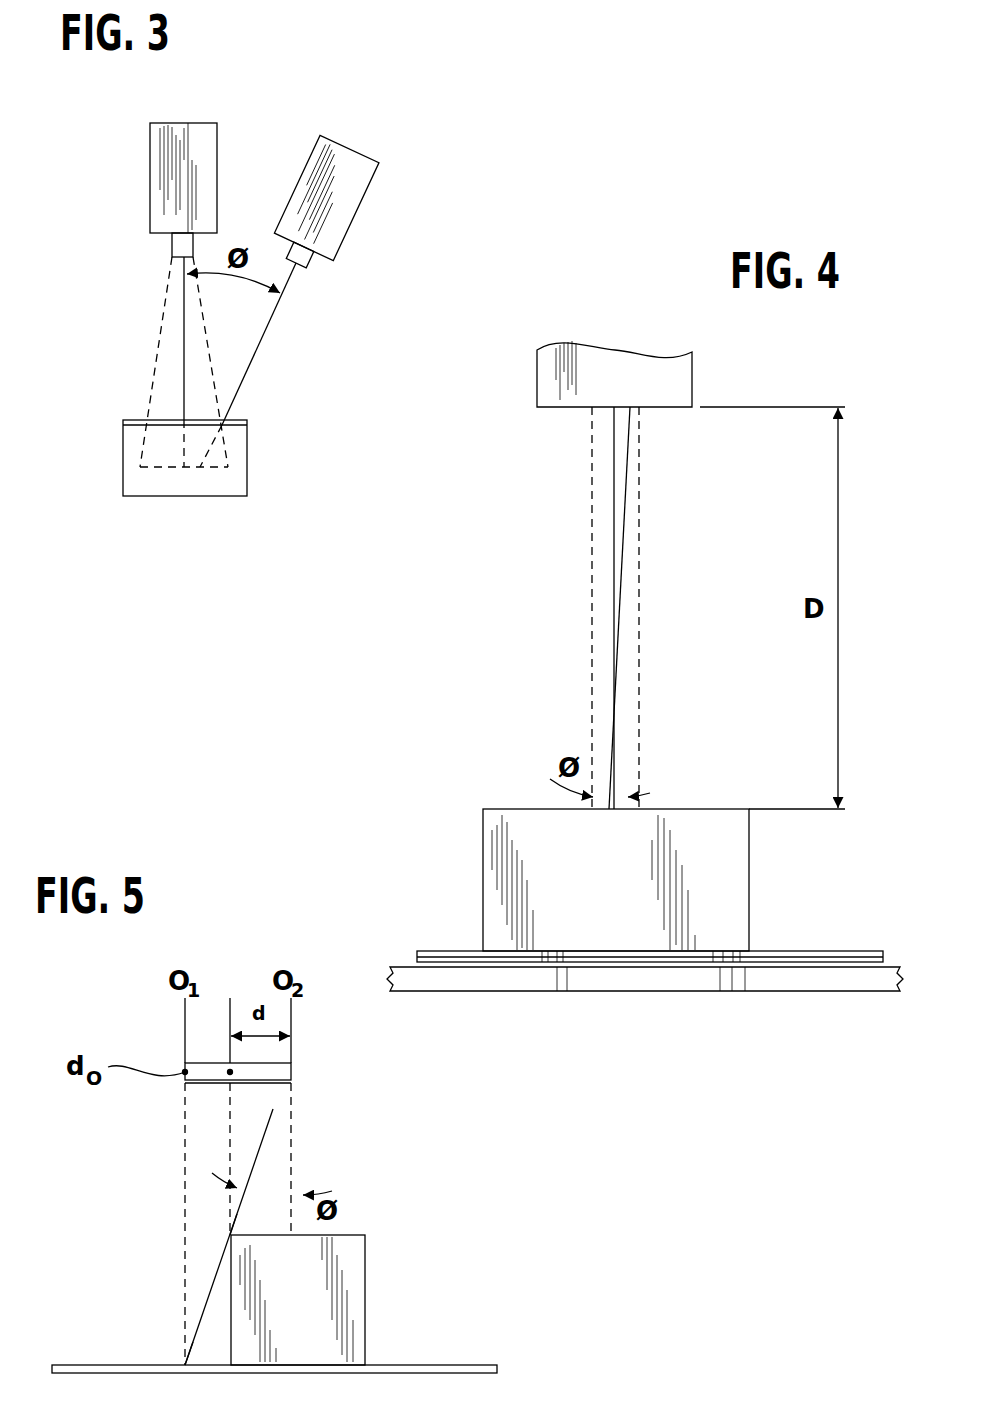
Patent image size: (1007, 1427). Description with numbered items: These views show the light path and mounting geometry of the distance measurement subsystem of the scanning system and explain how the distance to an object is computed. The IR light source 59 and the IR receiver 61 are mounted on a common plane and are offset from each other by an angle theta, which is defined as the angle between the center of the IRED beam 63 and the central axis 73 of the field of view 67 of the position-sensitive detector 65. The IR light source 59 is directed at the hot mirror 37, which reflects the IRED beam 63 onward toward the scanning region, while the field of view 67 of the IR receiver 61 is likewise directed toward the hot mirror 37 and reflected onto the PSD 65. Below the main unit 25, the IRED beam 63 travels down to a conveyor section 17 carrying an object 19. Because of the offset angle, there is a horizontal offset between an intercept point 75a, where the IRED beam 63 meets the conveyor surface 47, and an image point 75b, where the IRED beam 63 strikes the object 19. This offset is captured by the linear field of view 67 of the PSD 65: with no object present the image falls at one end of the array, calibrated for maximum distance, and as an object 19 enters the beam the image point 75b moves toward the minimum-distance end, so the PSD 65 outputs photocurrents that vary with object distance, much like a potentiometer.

In FIG. 4, the conveyor section 17 is at (840, 987).
In FIG. 4, the object 19 is at (716, 837).
In FIG. 5, the object 19 is at (348, 1267).
In FIG. 4, the main unit 25 is at (675, 378).
In FIG. 3, the hot mirror 37 is at (130, 482).
In FIG. 4, the conveyor surface 47 is at (820, 951).
In FIG. 5, the conveyor surface 47 is at (415, 1363).
In FIG. 3, the IR light source 59 is at (312, 157).
In FIG. 3, the IR receiver 61 is at (150, 163).
In FIG. 3, the IRED beam 63 is at (243, 375).
In FIG. 4, the IRED beam 63 is at (622, 492).
In FIG. 5, the IRED beam 63 is at (263, 1140).
In FIG. 5, the position-sensitive detector 65 is at (293, 1072).
In FIG. 3, the field of view 67 is at (167, 467).
In FIG. 4, the field of view 67 is at (590, 645).
In FIG. 3, the central axis 73 is at (183, 353).
In FIG. 4, the central axis 73 is at (612, 502).
In FIG. 5, the intercept point 75a is at (185, 1365).
In FIG. 5, the image point 75b is at (228, 1236).